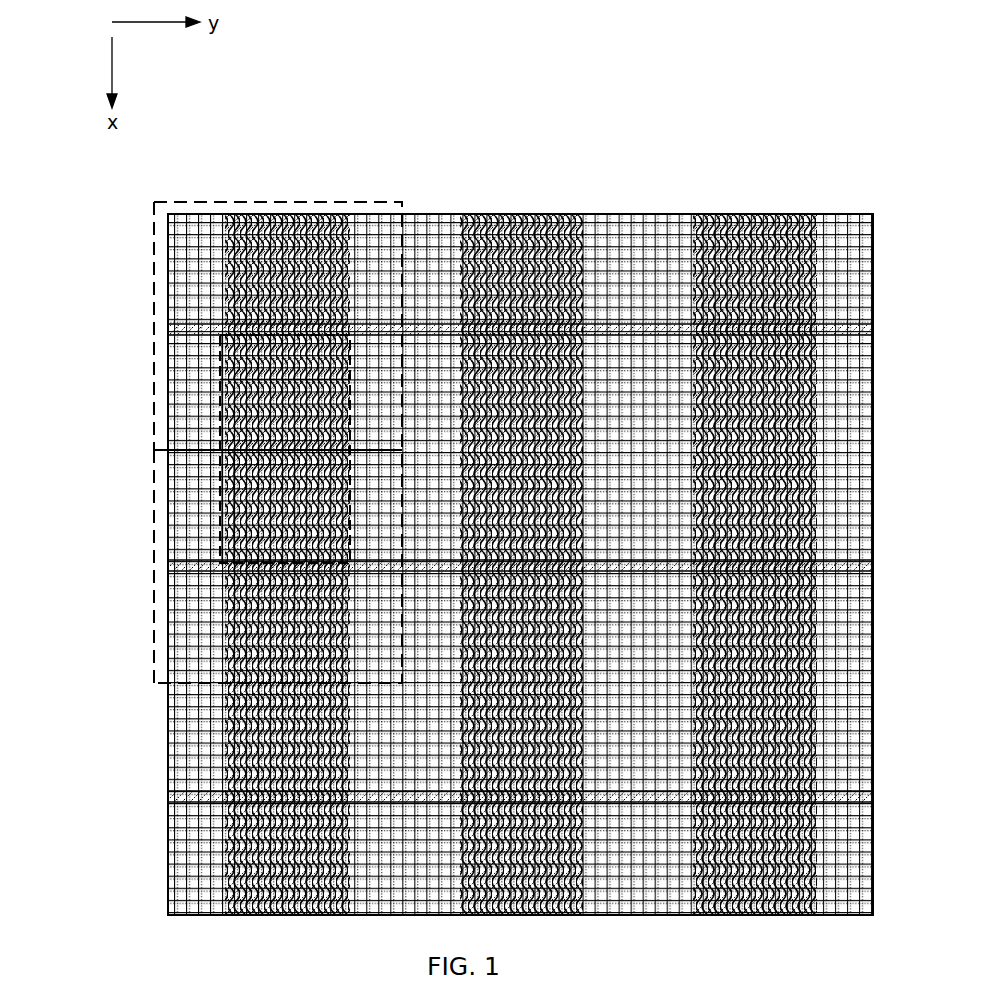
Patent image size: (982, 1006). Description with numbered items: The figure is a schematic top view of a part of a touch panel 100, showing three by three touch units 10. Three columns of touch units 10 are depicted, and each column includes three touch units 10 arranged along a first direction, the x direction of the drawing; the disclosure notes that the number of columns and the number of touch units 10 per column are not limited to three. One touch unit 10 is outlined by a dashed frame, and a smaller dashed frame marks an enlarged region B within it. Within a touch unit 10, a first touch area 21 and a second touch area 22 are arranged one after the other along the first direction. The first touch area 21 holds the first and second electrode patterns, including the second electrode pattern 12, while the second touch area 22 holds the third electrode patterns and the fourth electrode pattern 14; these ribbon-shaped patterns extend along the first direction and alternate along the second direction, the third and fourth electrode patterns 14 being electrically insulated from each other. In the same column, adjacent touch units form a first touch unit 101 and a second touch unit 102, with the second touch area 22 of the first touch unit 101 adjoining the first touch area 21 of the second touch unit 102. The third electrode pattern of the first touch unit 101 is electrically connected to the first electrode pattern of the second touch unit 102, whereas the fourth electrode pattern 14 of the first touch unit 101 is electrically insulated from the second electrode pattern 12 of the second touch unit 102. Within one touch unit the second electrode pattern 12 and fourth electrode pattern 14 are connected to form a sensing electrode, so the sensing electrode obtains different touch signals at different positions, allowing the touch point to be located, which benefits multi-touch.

The touch panel 100 is at (524, 69).
The touch unit 10 is at (262, 172).
The first touch unit 101 is at (153, 305).
The second touch unit 102 is at (153, 525).
The enlarged region B is at (340, 201).
The fourth electrode pattern 14 is at (231, 444).
The second touch area 22 is at (217, 378).
The second electrode pattern 12 is at (222, 466).
The first touch area 21 is at (220, 493).